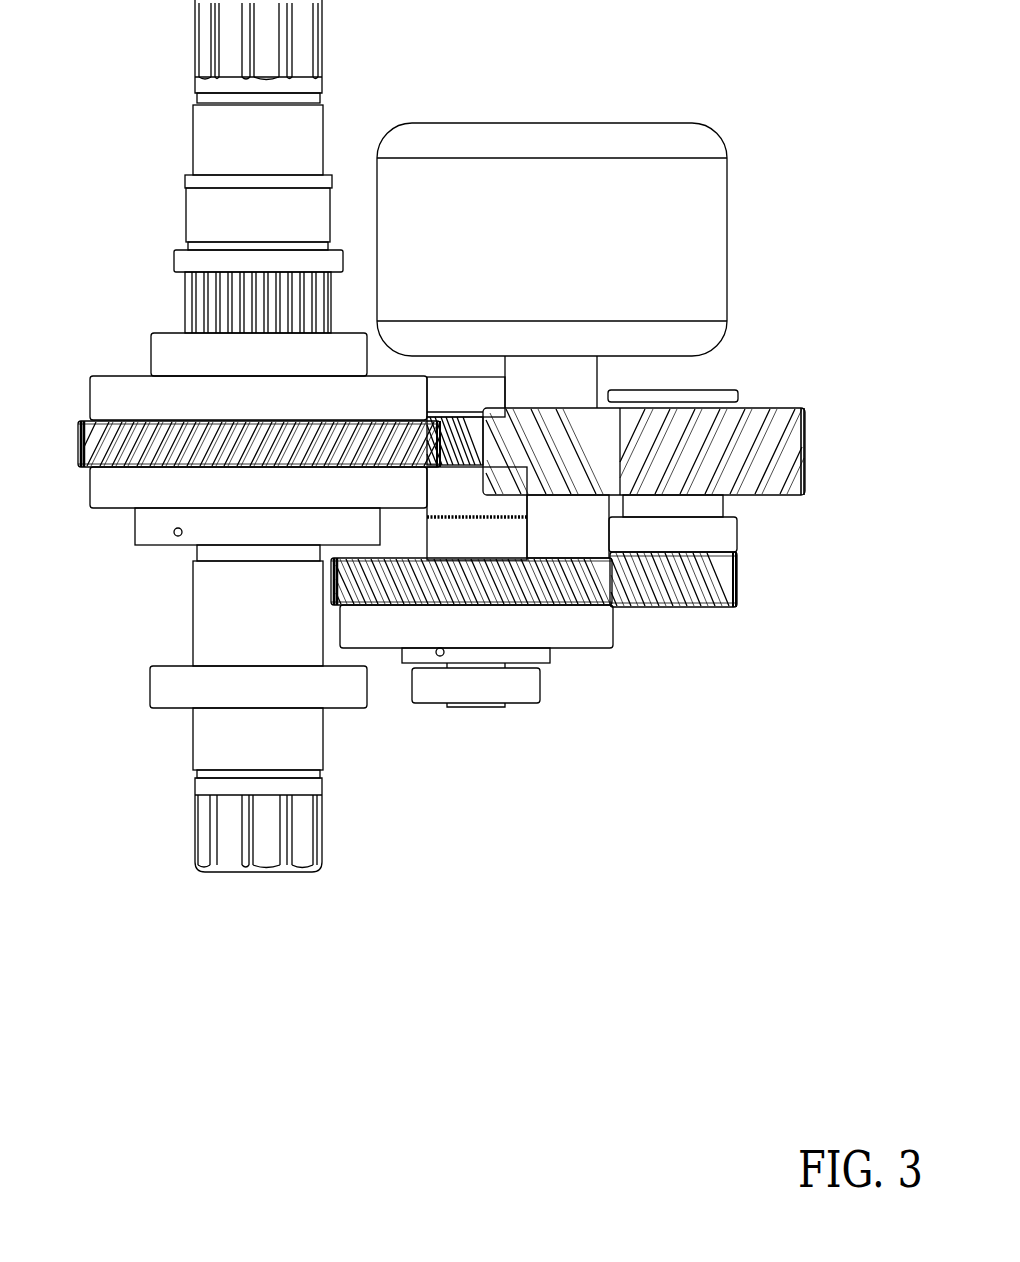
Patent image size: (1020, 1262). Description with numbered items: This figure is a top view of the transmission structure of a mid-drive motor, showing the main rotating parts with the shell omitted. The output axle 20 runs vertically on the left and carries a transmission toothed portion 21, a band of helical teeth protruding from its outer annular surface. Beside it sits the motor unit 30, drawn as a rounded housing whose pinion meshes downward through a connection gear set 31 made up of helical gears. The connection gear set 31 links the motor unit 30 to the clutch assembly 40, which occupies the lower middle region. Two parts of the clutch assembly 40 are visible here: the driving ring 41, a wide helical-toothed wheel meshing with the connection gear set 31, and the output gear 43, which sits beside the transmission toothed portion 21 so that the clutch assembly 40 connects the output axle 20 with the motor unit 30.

The output axle 20 is at (142, 302).
The transmission toothed portion 21 is at (78, 452).
The motor unit 30 is at (742, 240).
The connection gear set 31 is at (683, 608).
The clutch assembly 40 is at (473, 724).
The driving ring 41 is at (584, 606).
The output gear 43 is at (447, 412).